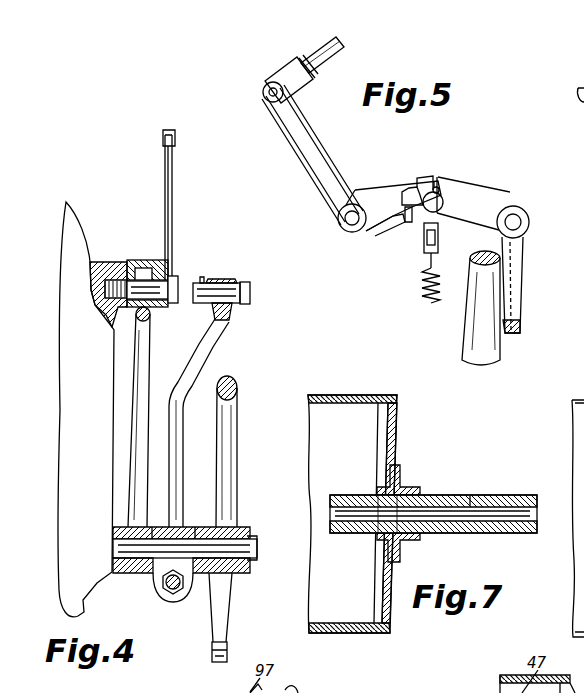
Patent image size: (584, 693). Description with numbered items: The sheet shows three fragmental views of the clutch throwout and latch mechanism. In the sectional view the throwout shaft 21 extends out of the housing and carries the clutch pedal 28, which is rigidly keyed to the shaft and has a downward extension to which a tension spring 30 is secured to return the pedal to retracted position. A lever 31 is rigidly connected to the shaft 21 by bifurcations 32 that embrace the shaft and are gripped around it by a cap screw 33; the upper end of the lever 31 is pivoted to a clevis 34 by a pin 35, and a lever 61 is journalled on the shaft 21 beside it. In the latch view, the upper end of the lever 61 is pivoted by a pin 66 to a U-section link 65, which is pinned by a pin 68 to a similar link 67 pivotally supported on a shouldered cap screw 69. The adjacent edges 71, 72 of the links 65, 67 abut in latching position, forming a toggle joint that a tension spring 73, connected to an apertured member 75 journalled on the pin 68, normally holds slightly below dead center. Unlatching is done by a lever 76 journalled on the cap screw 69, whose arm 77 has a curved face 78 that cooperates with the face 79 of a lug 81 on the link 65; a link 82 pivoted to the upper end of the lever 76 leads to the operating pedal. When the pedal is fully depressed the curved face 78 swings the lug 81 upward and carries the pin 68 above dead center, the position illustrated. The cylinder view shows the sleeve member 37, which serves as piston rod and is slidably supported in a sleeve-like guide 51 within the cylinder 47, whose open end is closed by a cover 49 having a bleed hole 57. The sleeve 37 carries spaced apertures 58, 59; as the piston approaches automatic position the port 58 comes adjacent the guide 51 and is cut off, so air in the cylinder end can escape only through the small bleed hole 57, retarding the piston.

In FIG. 4, the throwout shaft 21 is at (246, 554).
In FIG. 4, the clutch pedal 28 is at (225, 476).
In FIG. 4, the tension spring 30 is at (211, 655).
In FIG. 4, the lever 31 is at (179, 486).
In FIG. 5, the lever 31 is at (474, 329).
In FIG. 4, the bifurcations 32 is at (158, 592).
In FIG. 4, the cap screw 33 is at (178, 594).
In FIG. 4, the clevis 34 is at (228, 280).
In FIG. 4, the pin 35 is at (250, 292).
In FIG. 7, the sleeve member 37 is at (530, 491).
In FIG. 7, the cylinder 47 is at (370, 396).
In FIG. 7, the cover 49 is at (395, 450).
In FIG. 7, the sleeve-like guide 51 is at (403, 540).
In FIG. 7, the bleed hole 57 is at (397, 418).
In FIG. 7, the port 58 is at (372, 500).
In FIG. 7, the aperture 59 is at (481, 497).
In FIG. 4, the lever 61 is at (141, 352).
In FIG. 5, the lever 61 is at (521, 264).
In FIG. 5, the link 65 is at (487, 196).
In FIG. 5, the pin 66 is at (531, 222).
In FIG. 4, the link 67 is at (150, 262).
In FIG. 5, the link 67 is at (363, 192).
In FIG. 5, the pin 68 is at (444, 206).
In FIG. 4, the cap screw 69 is at (175, 281).
In FIG. 5, the cap screw 69 is at (347, 230).
In FIG. 5, the edge 71 is at (439, 188).
In FIG. 5, the edge 72 is at (432, 184).
In FIG. 5, the tension spring 73 is at (420, 287).
In FIG. 5, the apertured member 75 is at (439, 246).
In FIG. 5, the lever 76 is at (318, 177).
In FIG. 5, the arm 77 is at (386, 226).
In FIG. 5, the curved face 78 is at (409, 224).
In FIG. 5, the face 79 is at (402, 199).
In FIG. 5, the lug 81 is at (424, 189).
In FIG. 5, the link 82 is at (332, 44).